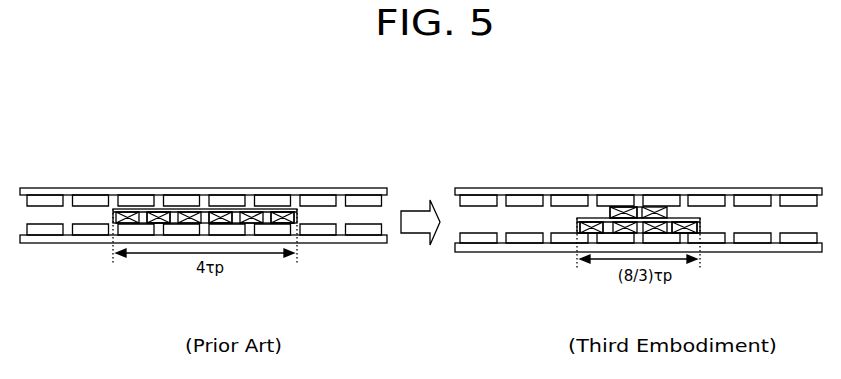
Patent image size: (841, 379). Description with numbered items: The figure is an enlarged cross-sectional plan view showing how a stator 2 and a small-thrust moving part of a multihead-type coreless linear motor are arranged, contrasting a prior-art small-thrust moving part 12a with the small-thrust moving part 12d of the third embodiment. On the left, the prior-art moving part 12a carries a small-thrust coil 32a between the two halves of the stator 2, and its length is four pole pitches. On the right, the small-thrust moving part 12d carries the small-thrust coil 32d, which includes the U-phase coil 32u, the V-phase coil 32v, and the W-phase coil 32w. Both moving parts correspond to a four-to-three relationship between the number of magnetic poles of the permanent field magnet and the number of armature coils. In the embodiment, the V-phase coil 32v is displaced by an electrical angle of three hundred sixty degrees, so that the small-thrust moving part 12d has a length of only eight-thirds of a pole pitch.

The stator (armature core) 2 is at (80, 235).
The mover (prior art) 12a is at (113, 210).
The small-thrust moving part 12d is at (577, 218).
The permanent magnet group (prior art) 32a is at (307, 114).
The small-thrust coil 32d is at (748, 121).
The U-phase coil 32u is at (155, 213).
The V-phase coil 32v is at (277, 215).
The W-phase coil 32w is at (218, 217).